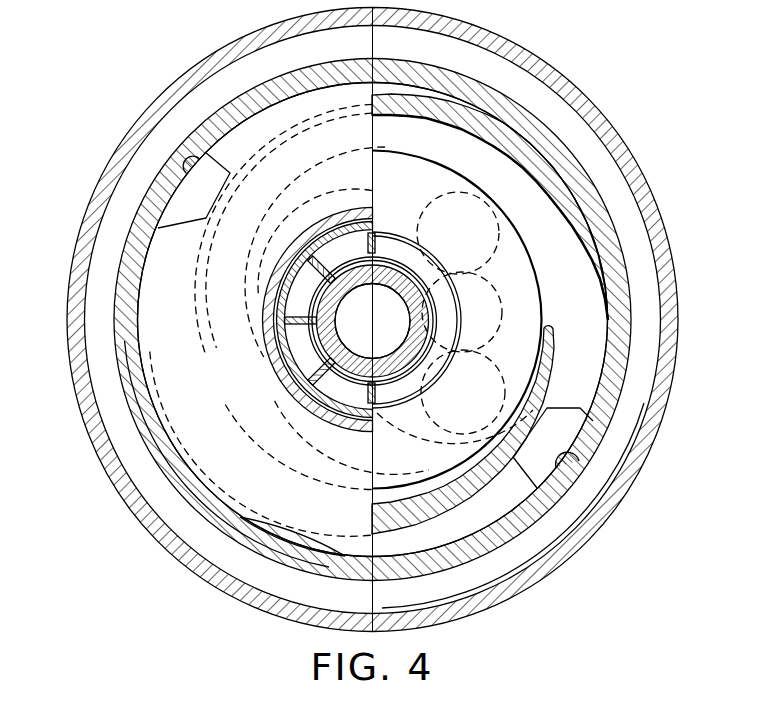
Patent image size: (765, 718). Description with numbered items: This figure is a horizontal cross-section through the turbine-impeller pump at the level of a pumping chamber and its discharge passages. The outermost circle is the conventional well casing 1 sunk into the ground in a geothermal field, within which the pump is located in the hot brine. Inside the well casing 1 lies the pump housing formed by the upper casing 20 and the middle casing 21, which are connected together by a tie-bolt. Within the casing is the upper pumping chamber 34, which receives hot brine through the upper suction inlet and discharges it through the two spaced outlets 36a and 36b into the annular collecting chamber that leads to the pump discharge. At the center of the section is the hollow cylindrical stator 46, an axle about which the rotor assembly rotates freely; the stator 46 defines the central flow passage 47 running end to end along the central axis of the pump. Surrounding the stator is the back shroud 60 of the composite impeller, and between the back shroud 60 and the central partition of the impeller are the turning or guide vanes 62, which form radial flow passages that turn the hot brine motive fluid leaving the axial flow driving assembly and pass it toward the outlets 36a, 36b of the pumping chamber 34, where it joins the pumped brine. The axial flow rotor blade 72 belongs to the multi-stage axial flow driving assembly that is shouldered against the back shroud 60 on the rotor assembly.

The well casing 1 is at (600, 107).
The upper casing 20 is at (148, 204).
The middle casing 21 is at (612, 222).
The upper pumping chamber 34 is at (580, 313).
The discharge outlet 36a is at (191, 160).
The discharge outlet 36b is at (582, 462).
The hollow cylindrical stator 46 is at (350, 280).
The central flow passage 47 is at (387, 344).
The back shroud 60 is at (264, 305).
The guide vanes 62 is at (432, 165).
The axial flow rotor blade 72 is at (288, 350).